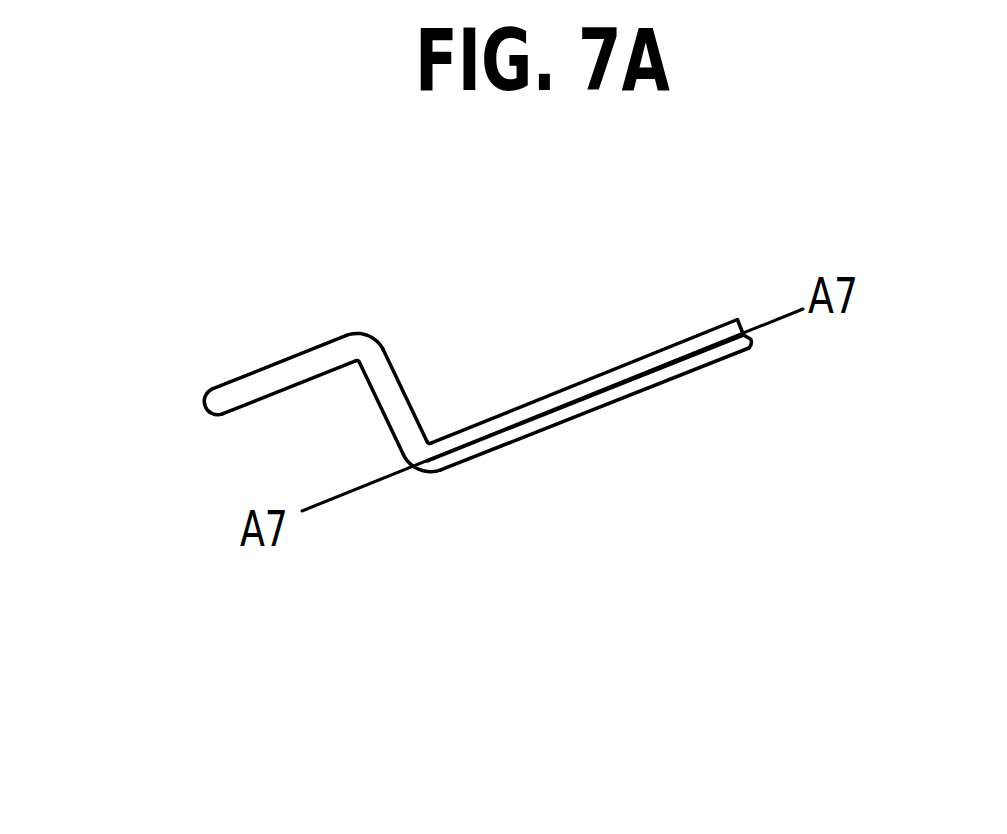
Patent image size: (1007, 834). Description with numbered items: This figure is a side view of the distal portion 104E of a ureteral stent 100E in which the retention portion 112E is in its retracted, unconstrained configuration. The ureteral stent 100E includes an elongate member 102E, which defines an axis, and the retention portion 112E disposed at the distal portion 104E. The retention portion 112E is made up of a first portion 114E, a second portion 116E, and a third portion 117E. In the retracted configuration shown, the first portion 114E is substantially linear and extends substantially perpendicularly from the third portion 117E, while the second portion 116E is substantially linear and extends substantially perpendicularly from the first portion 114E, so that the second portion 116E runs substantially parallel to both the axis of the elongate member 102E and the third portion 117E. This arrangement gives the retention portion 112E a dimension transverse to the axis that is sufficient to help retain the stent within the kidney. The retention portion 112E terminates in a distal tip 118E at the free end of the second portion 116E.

The ureteral stent 100E is at (413, 650).
The elongate member 102E is at (712, 375).
The distal portion 104E is at (381, 504).
The retention portion 112E is at (322, 342).
The first portion 114E is at (395, 371).
The second portion 116E is at (238, 379).
The third portion 117E is at (528, 435).
The distal tip 118E is at (205, 410).